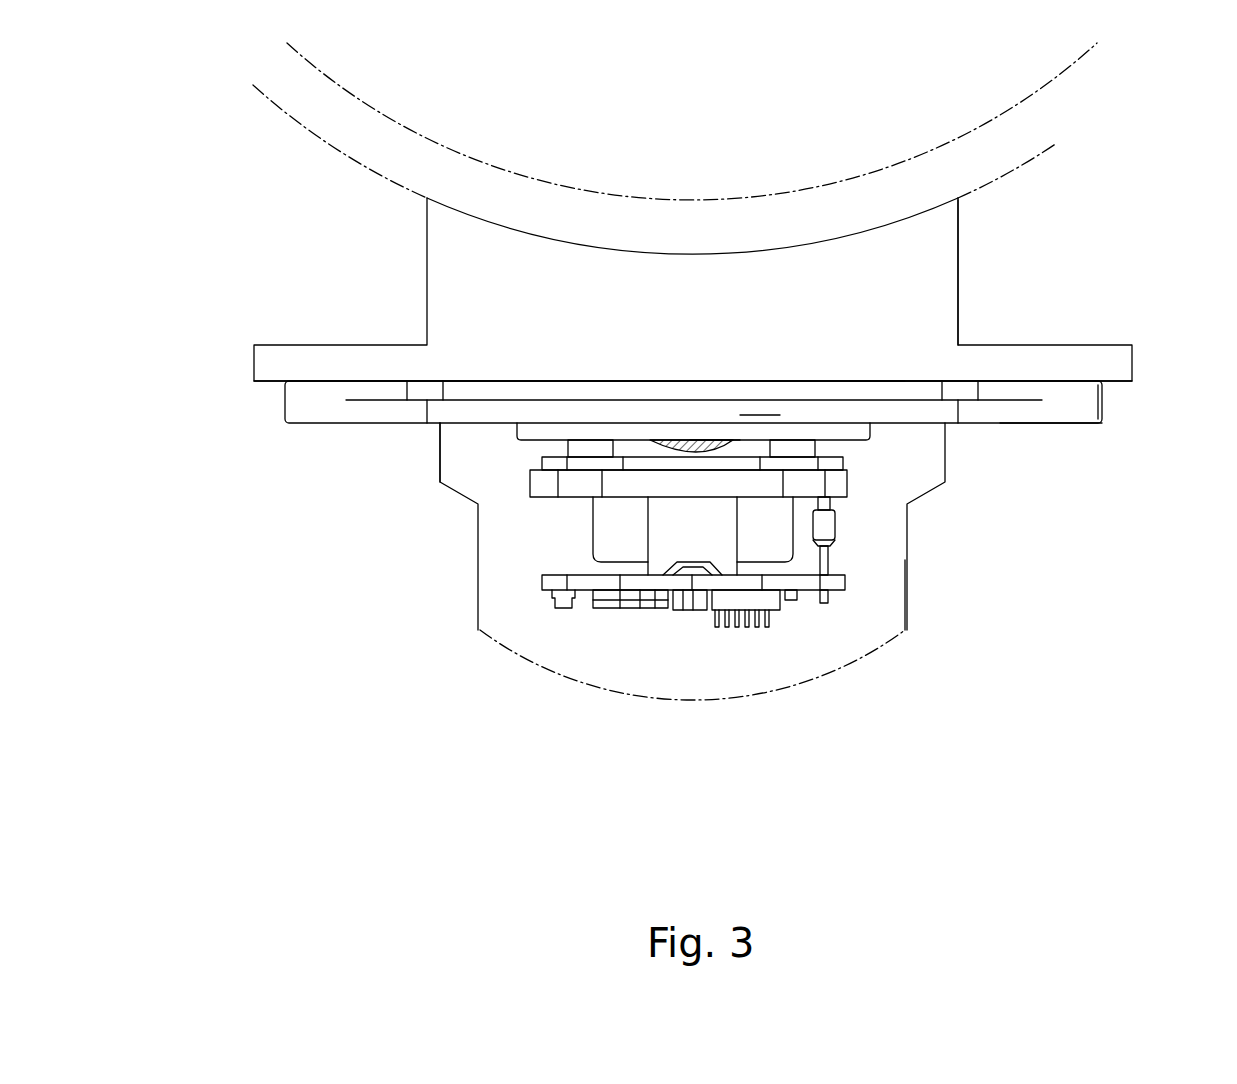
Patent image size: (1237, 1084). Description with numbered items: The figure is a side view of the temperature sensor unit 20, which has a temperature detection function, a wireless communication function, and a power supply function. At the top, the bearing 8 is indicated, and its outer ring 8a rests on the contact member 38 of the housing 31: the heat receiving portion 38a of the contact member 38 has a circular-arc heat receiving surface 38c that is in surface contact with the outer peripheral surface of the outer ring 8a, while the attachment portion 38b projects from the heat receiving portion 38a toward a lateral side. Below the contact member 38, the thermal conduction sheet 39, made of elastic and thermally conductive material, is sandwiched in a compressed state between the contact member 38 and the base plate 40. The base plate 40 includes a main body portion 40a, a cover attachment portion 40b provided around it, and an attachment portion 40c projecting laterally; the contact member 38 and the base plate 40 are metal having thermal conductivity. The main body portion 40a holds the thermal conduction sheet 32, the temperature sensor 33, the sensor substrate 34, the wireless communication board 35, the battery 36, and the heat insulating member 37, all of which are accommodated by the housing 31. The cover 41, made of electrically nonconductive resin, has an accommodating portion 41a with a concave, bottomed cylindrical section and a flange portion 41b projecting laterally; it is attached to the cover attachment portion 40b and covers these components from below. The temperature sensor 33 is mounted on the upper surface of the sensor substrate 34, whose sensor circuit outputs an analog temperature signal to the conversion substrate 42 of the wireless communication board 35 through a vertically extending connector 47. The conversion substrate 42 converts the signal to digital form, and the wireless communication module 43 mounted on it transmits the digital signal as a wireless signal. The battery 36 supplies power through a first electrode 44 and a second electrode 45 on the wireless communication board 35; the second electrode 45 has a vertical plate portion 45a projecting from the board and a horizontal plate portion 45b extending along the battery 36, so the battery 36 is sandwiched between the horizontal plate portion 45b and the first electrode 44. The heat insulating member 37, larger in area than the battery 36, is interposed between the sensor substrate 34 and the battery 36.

The bearing 8 is at (1110, 107).
The outer ring 8a is at (1057, 139).
The temperature sensor unit 20 is at (817, 705).
The housing 31 is at (1073, 427).
The thermal conduction sheet 32 is at (648, 444).
The temperature sensor 33 is at (712, 440).
The sensor substrate 34 is at (847, 463).
The wireless communication board 35 is at (850, 583).
The battery 36 is at (767, 548).
The heat insulating member 37 is at (530, 482).
The contact member 38 is at (427, 275).
The heat receiving portion 38a is at (935, 243).
The attachment portion 38b is at (1132, 365).
The heat receiving surface 38c is at (550, 237).
The thermal conduction sheet 39 is at (877, 381).
The base plate 40 is at (285, 400).
The main body portion 40a is at (760, 415).
The cover attachment portion 40b is at (912, 428).
The attachment portion 40c is at (1102, 403).
The cover 41 is at (478, 547).
The accommodating portion 41a is at (887, 647).
The flange portion 41b is at (440, 445).
The conversion substrate 42 is at (535, 580).
The wireless communication module 43 is at (563, 598).
The first electrode 44 is at (690, 567).
The second electrode 45 is at (627, 671).
The vertical plate portion 45a is at (658, 535).
The horizontal plate portion 45b is at (662, 496).
The connector 47 is at (835, 525).